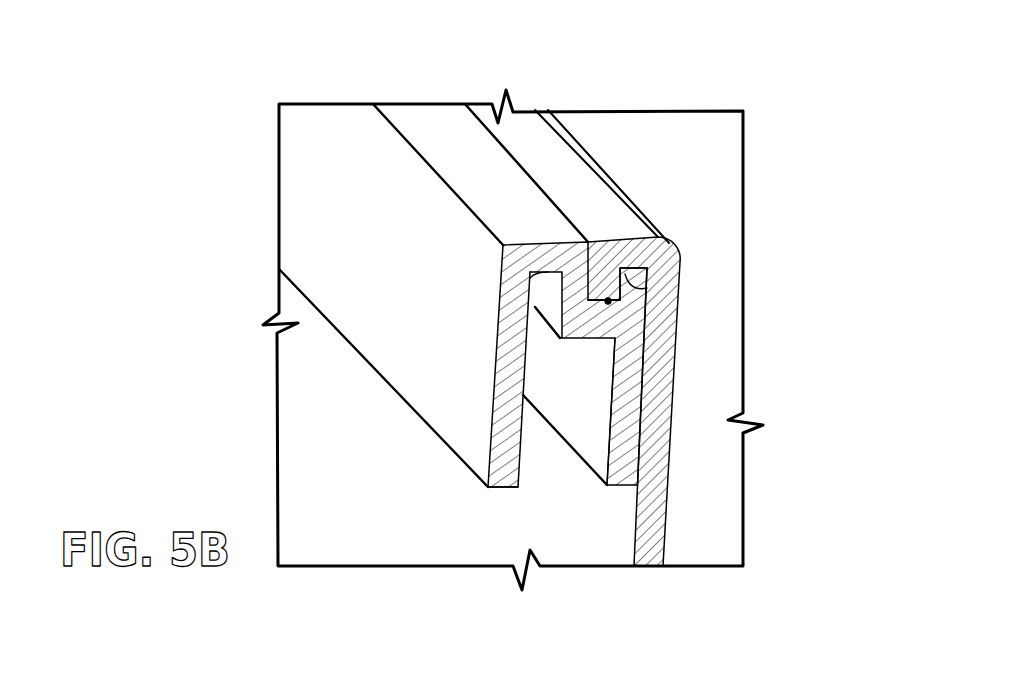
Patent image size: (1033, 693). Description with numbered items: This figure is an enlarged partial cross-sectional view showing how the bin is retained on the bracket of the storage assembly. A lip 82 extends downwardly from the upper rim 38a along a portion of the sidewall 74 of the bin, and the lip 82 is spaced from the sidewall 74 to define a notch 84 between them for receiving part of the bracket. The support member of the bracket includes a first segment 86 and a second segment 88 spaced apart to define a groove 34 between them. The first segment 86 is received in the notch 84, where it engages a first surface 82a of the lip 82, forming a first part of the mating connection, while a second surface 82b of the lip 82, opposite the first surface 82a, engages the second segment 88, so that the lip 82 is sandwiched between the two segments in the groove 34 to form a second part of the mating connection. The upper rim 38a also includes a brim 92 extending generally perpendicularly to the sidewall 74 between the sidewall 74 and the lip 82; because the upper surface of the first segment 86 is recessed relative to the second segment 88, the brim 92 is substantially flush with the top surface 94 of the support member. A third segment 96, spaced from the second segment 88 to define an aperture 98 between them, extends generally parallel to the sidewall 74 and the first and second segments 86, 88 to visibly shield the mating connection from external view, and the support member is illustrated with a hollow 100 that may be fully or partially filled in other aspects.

The groove 34 is at (526, 326).
The upper rim 38a is at (578, 135).
The sidewall 74 is at (712, 360).
The lip 82 is at (521, 326).
The first surface 82a is at (600, 297).
The second surface 82b is at (620, 388).
The notch 84 is at (647, 287).
The first segment 86 is at (623, 448).
The second segment 88 is at (530, 310).
The brim 92 is at (612, 300).
The top surface 94 is at (503, 207).
The third segment 96 is at (505, 467).
The aperture 98 is at (530, 292).
The hollow 100 is at (543, 463).